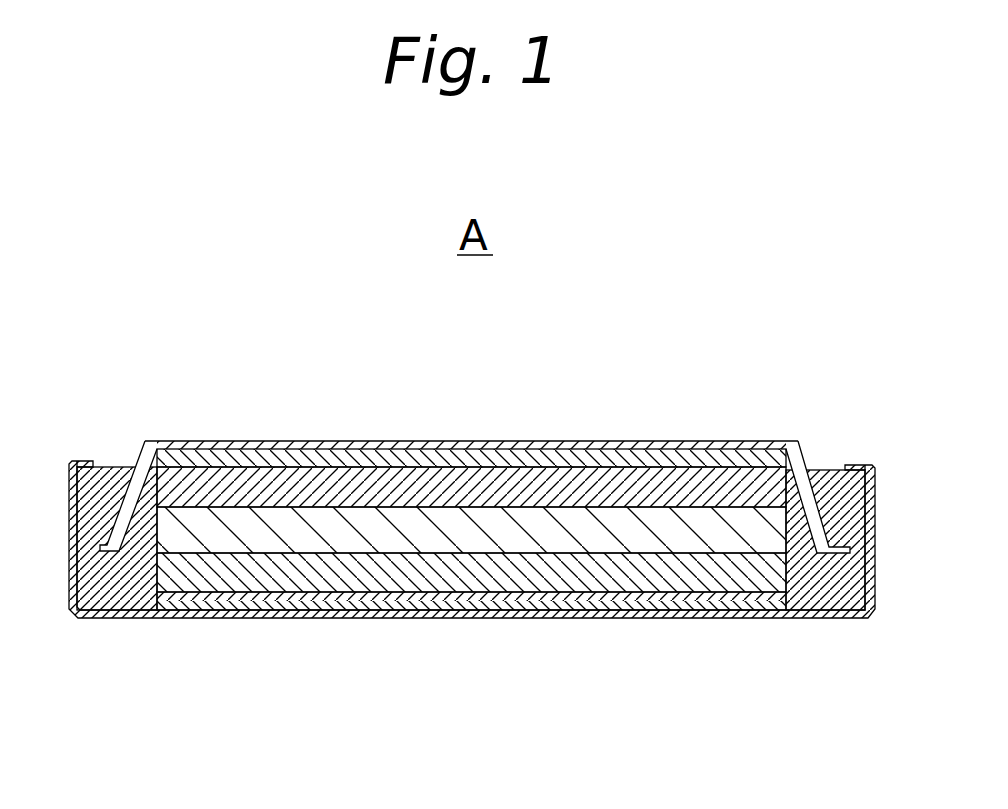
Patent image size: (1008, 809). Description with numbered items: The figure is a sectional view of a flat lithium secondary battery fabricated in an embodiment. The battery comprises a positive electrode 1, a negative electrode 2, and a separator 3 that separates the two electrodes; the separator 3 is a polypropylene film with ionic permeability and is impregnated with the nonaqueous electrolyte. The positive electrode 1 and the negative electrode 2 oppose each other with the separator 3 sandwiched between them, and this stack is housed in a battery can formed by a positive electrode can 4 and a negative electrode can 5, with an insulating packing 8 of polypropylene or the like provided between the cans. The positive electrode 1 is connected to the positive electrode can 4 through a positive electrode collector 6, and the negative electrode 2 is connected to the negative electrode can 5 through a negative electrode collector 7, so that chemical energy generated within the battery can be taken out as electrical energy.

The positive electrode 1 is at (705, 600).
The negative electrode 2 is at (188, 480).
The separator 3 is at (300, 540).
The positive electrode can 4 is at (593, 620).
The negative electrode can 5 is at (283, 440).
The positive electrode collector 6 is at (353, 603).
The negative electrode collector 7 is at (525, 452).
The insulating packing 8 is at (100, 493).